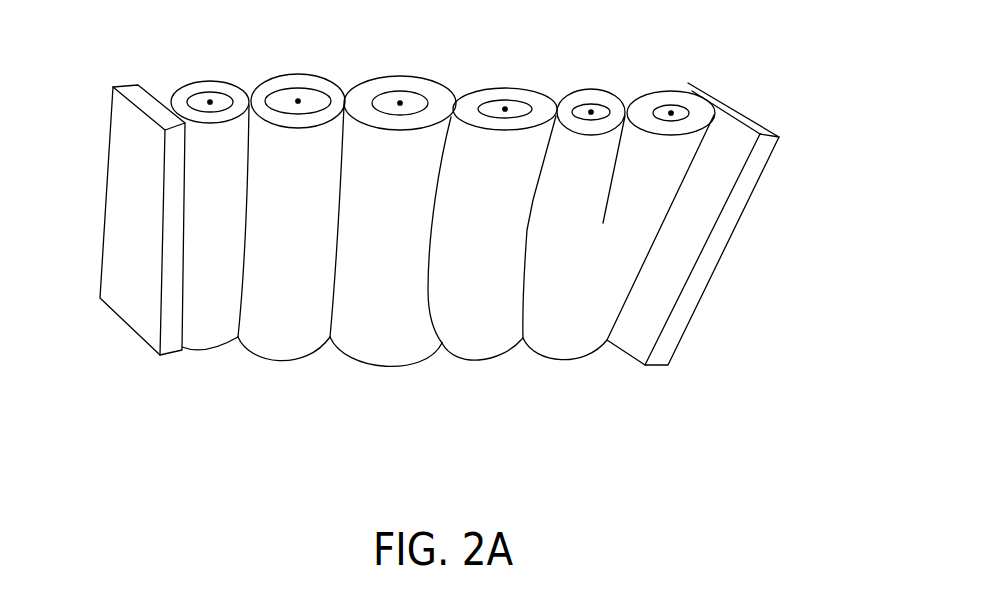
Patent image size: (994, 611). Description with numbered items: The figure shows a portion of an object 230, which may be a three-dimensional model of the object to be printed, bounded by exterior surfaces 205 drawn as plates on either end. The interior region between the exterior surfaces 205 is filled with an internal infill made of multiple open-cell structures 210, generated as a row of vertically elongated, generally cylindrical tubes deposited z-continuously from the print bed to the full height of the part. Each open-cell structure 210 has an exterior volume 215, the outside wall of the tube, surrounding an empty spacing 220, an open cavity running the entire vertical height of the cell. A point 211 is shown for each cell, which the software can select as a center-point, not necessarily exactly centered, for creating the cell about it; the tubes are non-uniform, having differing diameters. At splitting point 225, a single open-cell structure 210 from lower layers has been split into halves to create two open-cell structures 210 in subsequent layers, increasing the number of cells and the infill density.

The exterior surfaces 205 is at (113, 88).
The open-cell structures 210 is at (230, 206).
The points 211 is at (212, 101).
The exterior volume 215 is at (324, 81).
The empty spacing 220 is at (420, 100).
The splitting point 225 is at (591, 253).
The object 230 is at (762, 270).